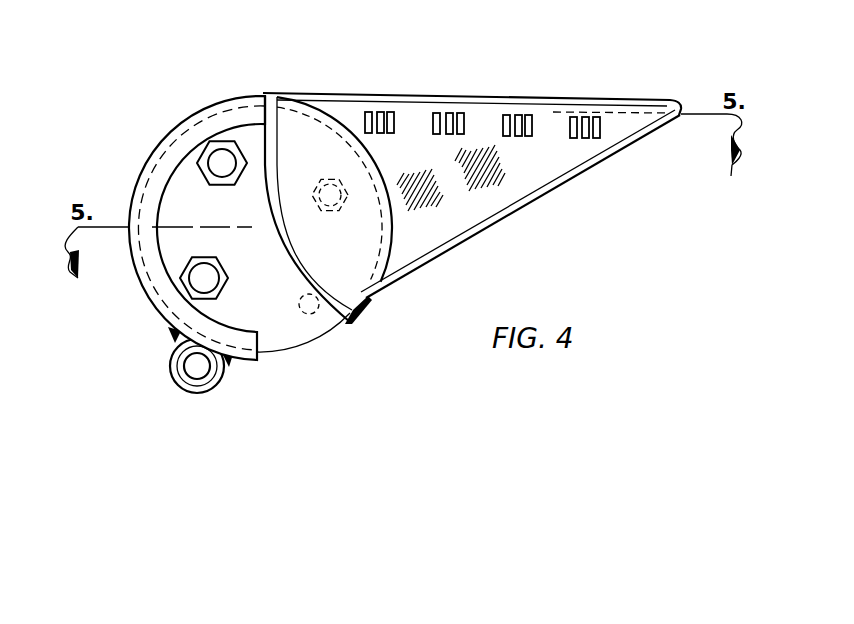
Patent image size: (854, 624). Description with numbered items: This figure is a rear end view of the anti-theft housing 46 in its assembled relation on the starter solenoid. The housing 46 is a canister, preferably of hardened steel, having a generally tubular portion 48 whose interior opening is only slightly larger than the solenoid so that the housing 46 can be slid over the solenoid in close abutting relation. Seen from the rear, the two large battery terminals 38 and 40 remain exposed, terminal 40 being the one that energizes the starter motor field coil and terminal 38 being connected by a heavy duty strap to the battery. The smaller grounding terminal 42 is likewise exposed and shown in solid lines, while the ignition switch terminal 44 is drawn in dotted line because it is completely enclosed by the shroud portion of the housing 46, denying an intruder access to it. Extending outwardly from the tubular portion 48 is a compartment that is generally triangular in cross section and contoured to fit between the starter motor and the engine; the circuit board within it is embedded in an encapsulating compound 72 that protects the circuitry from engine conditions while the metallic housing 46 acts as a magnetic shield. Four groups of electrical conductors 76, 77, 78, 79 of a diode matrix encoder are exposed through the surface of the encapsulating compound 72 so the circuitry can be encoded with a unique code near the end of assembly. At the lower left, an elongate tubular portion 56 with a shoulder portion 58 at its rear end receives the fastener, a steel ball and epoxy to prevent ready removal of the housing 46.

The large terminal 38 is at (208, 150).
The large terminal 40 is at (312, 314).
The grounding terminal 42 is at (188, 282).
The ignition switch terminal 44 is at (333, 176).
The housing 46 is at (322, 88).
The tubular portion 48 is at (163, 315).
The elongate tubular portion 56 is at (175, 382).
The shoulder portion 58 is at (202, 382).
The encapsulating compound 72 is at (475, 193).
The electrical conductor group 76 is at (385, 110).
The electrical conductor group 77 is at (454, 110).
The electrical conductor group 78 is at (519, 112).
The electrical conductor group 79 is at (585, 114).